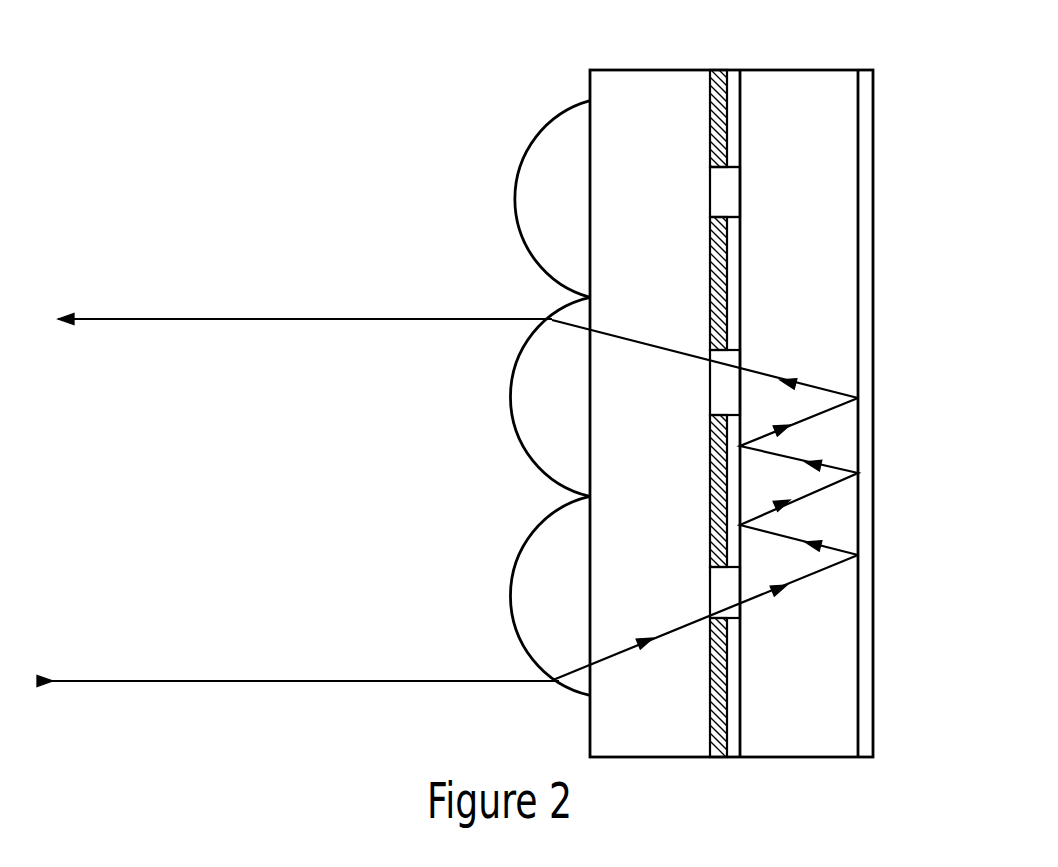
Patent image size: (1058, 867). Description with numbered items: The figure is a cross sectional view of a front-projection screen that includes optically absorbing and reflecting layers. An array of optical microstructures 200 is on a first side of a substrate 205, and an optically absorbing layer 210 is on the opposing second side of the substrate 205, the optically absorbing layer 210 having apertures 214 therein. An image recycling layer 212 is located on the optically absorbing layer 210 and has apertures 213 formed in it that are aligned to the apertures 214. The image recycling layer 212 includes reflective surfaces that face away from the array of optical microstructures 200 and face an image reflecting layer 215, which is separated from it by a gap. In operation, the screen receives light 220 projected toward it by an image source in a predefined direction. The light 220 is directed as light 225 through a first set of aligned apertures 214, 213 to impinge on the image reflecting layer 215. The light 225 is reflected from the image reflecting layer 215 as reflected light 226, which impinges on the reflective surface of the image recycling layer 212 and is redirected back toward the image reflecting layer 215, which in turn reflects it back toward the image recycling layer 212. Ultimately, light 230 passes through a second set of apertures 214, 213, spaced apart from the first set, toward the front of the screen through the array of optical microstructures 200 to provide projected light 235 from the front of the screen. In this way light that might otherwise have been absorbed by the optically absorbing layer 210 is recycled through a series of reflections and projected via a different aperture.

The array of optical microstructures 200 is at (558, 110).
The substrate 205 is at (620, 68).
The optically absorbing layer 210 is at (717, 68).
The image recycling layer 212 is at (733, 68).
The apertures 213 is at (743, 185).
The apertures 214 is at (723, 198).
The image reflecting layer 215 is at (863, 68).
The light 220 is at (400, 678).
The light 225 is at (680, 625).
The reflected light 226 is at (790, 540).
The light 230 is at (766, 380).
The projected light 235 is at (285, 318).